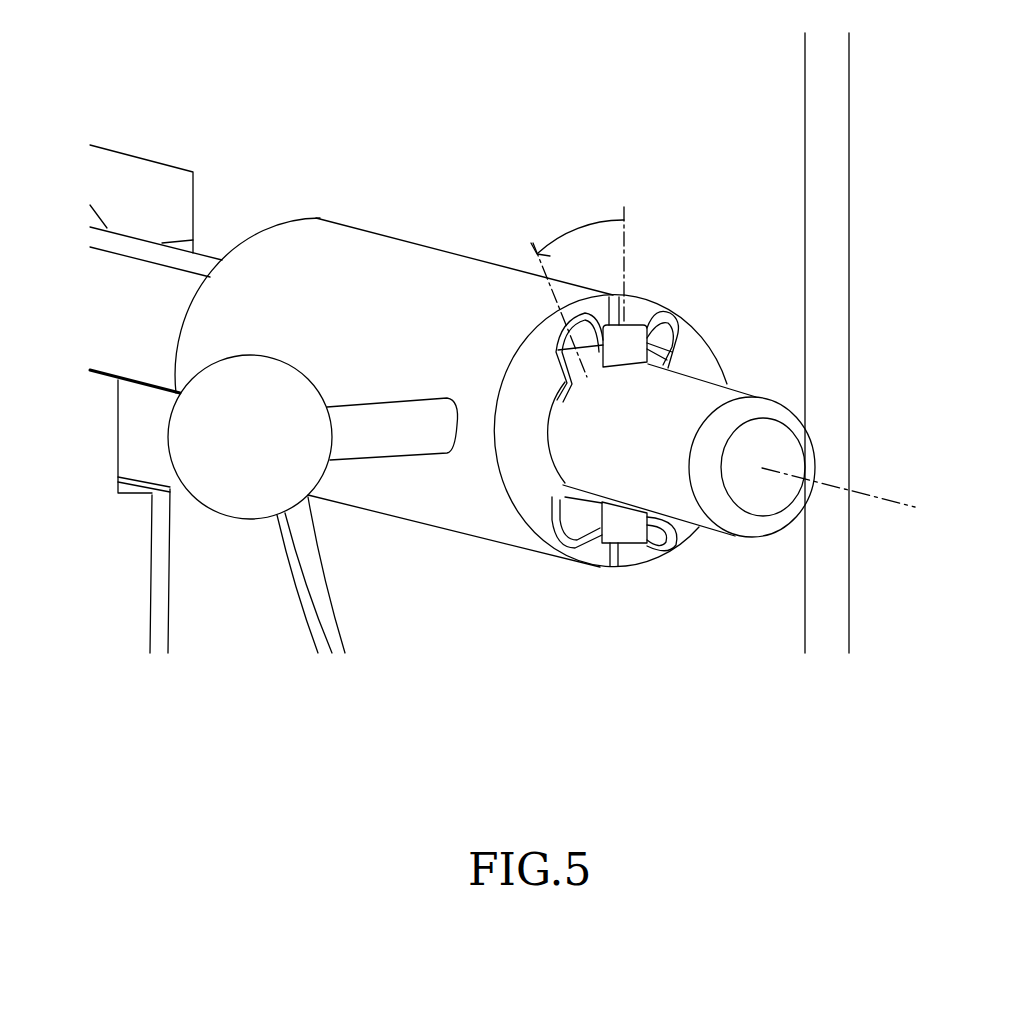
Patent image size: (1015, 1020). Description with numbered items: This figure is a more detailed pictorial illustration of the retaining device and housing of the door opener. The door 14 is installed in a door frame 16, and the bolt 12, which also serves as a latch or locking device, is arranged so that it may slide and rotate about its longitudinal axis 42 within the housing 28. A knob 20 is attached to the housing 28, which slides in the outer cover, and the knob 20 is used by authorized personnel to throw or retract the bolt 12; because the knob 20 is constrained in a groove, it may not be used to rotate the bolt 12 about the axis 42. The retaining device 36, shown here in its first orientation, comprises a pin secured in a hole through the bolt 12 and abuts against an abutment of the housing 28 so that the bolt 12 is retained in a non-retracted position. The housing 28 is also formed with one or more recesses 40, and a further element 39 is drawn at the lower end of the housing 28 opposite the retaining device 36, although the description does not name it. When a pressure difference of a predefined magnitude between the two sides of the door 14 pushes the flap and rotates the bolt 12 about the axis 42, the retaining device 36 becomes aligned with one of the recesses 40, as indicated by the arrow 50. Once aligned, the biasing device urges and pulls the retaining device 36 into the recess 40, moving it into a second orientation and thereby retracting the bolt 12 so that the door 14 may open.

The bolt 12 is at (647, 400).
The door 14 is at (737, 34).
The door frame 16 is at (919, 34).
The knob 20 is at (238, 442).
The housing 28 is at (450, 297).
The retaining device 36 is at (620, 343).
The lower key block 39 is at (627, 557).
The recess 40 is at (580, 517).
The longitudinal axis 42 is at (873, 495).
The arrow 50 is at (577, 226).